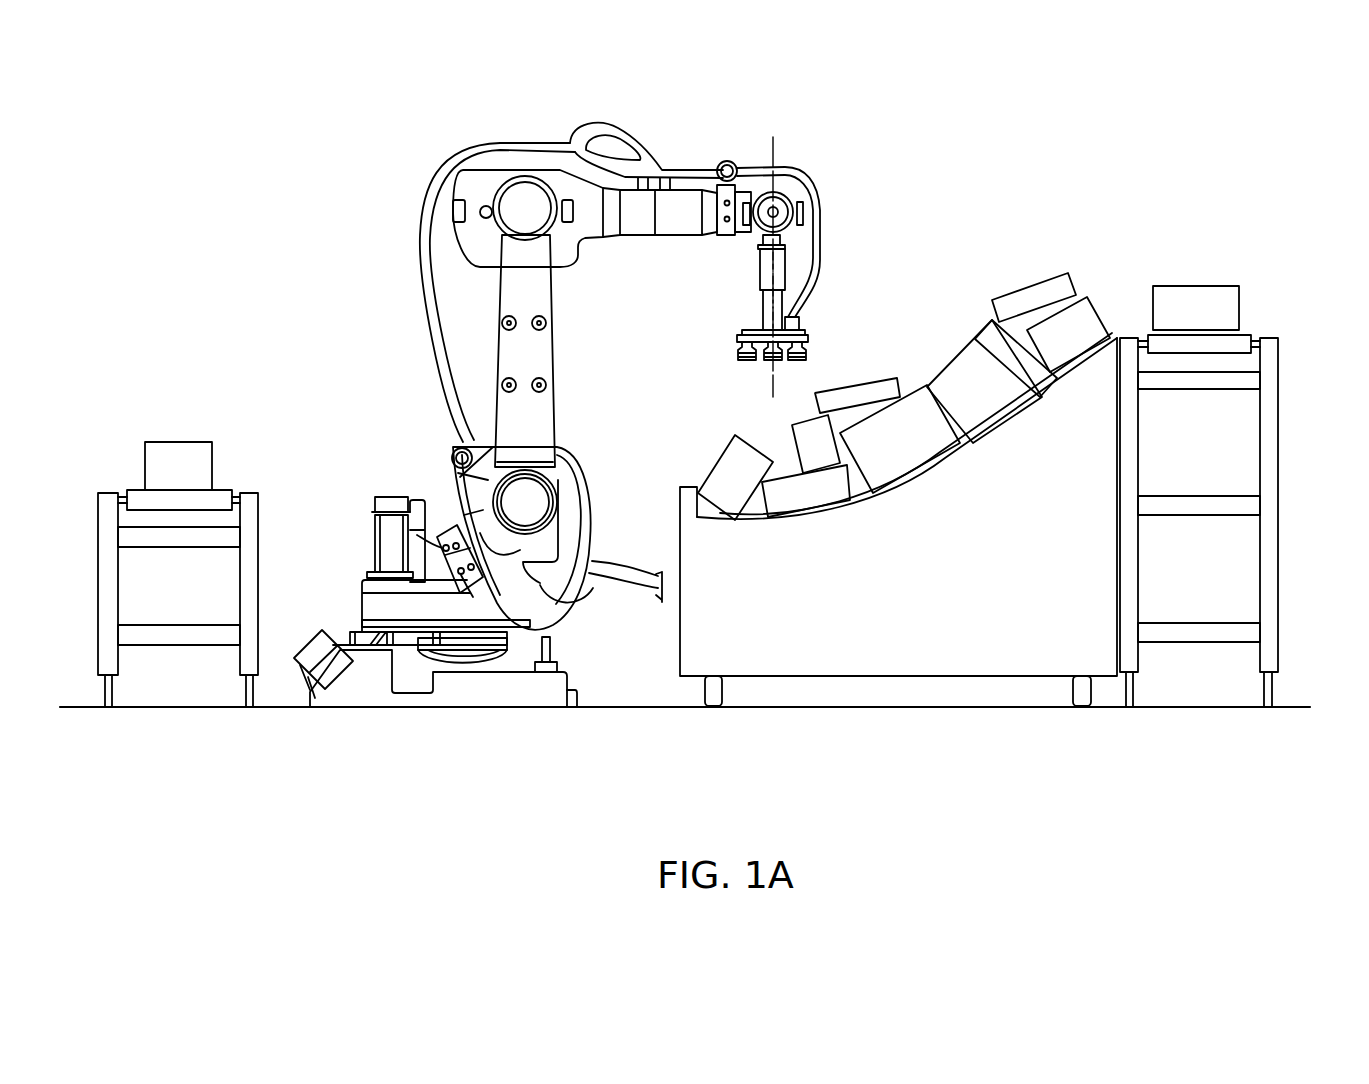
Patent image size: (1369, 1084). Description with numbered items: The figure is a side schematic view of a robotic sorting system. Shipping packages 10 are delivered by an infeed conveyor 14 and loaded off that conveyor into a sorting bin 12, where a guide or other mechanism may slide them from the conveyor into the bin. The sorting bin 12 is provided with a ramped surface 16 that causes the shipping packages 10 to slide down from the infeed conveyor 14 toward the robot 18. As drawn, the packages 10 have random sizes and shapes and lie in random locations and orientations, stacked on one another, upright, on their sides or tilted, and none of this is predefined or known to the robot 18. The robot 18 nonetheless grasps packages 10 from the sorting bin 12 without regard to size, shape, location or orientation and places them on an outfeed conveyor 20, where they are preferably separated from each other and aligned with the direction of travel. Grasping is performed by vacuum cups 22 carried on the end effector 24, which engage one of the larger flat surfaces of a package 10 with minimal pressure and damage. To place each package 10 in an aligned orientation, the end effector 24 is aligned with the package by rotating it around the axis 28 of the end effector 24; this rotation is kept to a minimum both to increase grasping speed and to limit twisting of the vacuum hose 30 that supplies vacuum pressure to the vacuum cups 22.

The shipping packages 10 is at (187, 440).
The sorting bin 12 is at (923, 237).
The infeed conveyor 14 is at (1280, 352).
The ramped surface 16 is at (957, 463).
The robot 18 is at (503, 172).
The outfeed conveyor 20 is at (260, 512).
The vacuum cups 22 is at (737, 348).
The end effector 24 is at (747, 330).
The axis 28 is at (775, 150).
The vacuum hose 30 is at (820, 242).